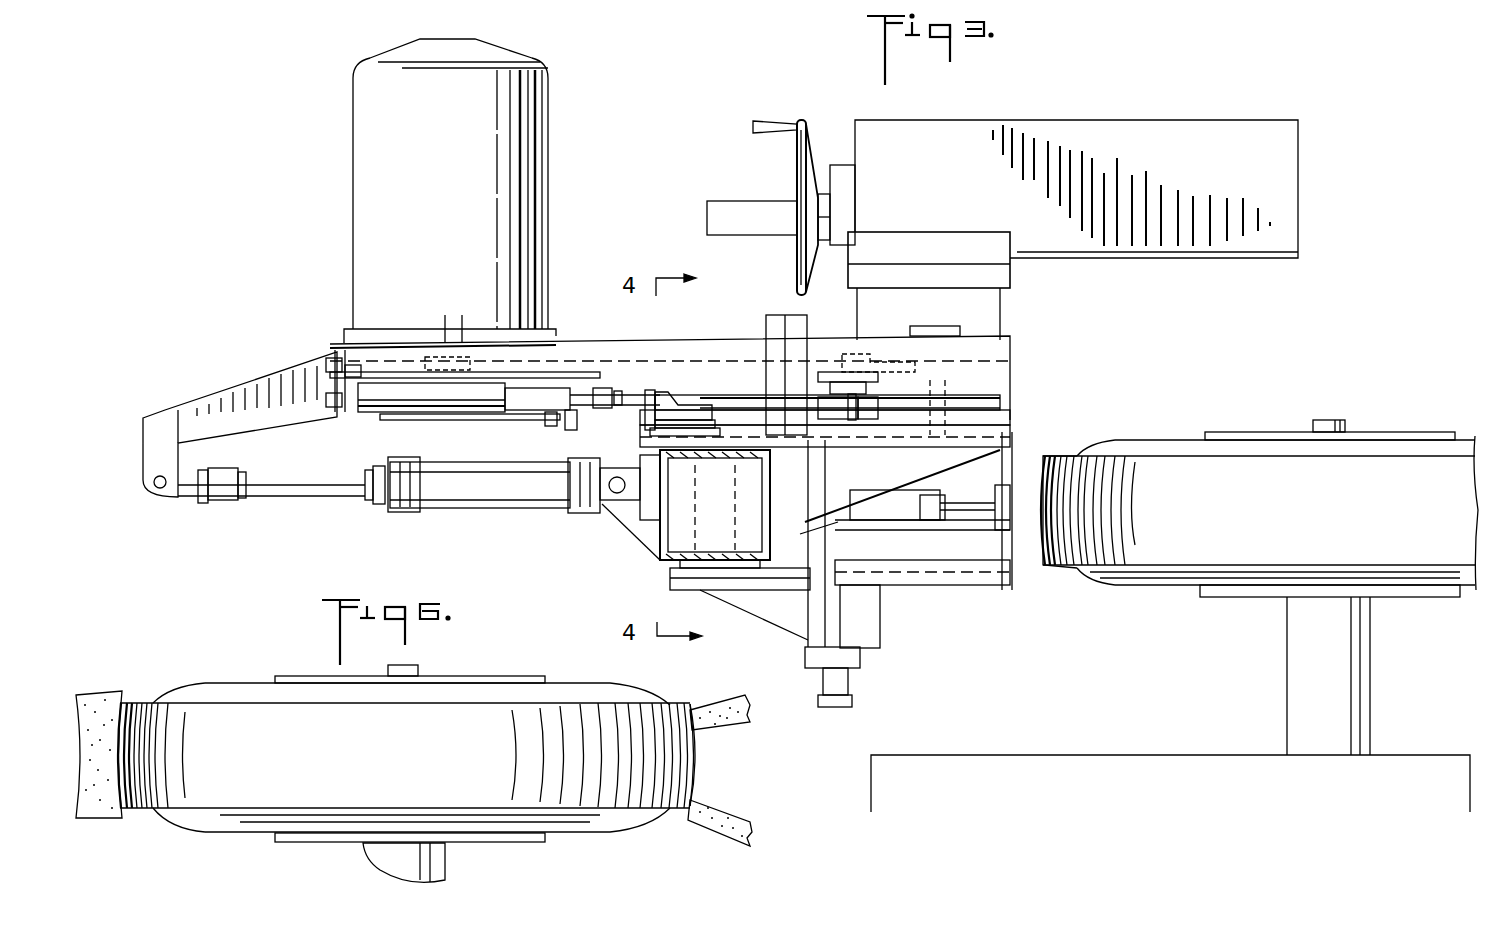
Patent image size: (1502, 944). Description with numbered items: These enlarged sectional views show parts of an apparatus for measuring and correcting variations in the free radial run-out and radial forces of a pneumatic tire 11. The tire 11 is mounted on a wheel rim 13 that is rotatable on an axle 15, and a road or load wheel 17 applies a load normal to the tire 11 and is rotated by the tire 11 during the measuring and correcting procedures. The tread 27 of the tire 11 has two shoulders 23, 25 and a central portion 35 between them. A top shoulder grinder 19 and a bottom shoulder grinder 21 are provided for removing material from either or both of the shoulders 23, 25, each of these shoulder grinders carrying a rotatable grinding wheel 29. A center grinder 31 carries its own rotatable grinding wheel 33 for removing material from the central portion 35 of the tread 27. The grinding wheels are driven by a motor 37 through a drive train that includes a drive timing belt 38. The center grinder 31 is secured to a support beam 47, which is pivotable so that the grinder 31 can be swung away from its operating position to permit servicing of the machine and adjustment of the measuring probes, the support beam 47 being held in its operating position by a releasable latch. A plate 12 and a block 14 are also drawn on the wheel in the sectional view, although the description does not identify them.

In FIG. 3, the pneumatic tire 11 is at (1106, 440).
In FIG. 6, the pneumatic tire 11 is at (226, 833).
In FIG. 6, the plate 12 is at (285, 678).
In FIG. 3, the wheel rim 13 is at (1203, 432).
In FIG. 6, the block 14 is at (420, 670).
In FIG. 3, the axle 15 is at (1345, 420).
In FIG. 6, the load wheel 17 is at (100, 700).
In FIG. 6, the top shoulder grinder 19 is at (722, 688).
In FIG. 6, the bottom shoulder grinder 21 is at (735, 845).
In FIG. 3, the shoulder 23 is at (1032, 505).
In FIG. 6, the shoulder 23 is at (688, 712).
In FIG. 3, the shoulder 25 is at (1246, 517).
In FIG. 6, the shoulder 25 is at (685, 810).
In FIG. 3, the tread 27 is at (1041, 563).
In FIG. 6, the tread 27 is at (700, 768).
In FIG. 6, the grinding wheel 29 is at (748, 716).
In FIG. 3, the center grinder 31 is at (910, 600).
In FIG. 3, the grinding wheel 33 is at (1015, 465).
In FIG. 3, the central portion 35 is at (1037, 517).
In FIG. 6, the central portion 35 is at (676, 810).
In FIG. 3, the motor 37 is at (456, 205).
In FIG. 3, the drive timing belt 38 is at (710, 360).
In FIG. 3, the support beam 47 is at (770, 505).